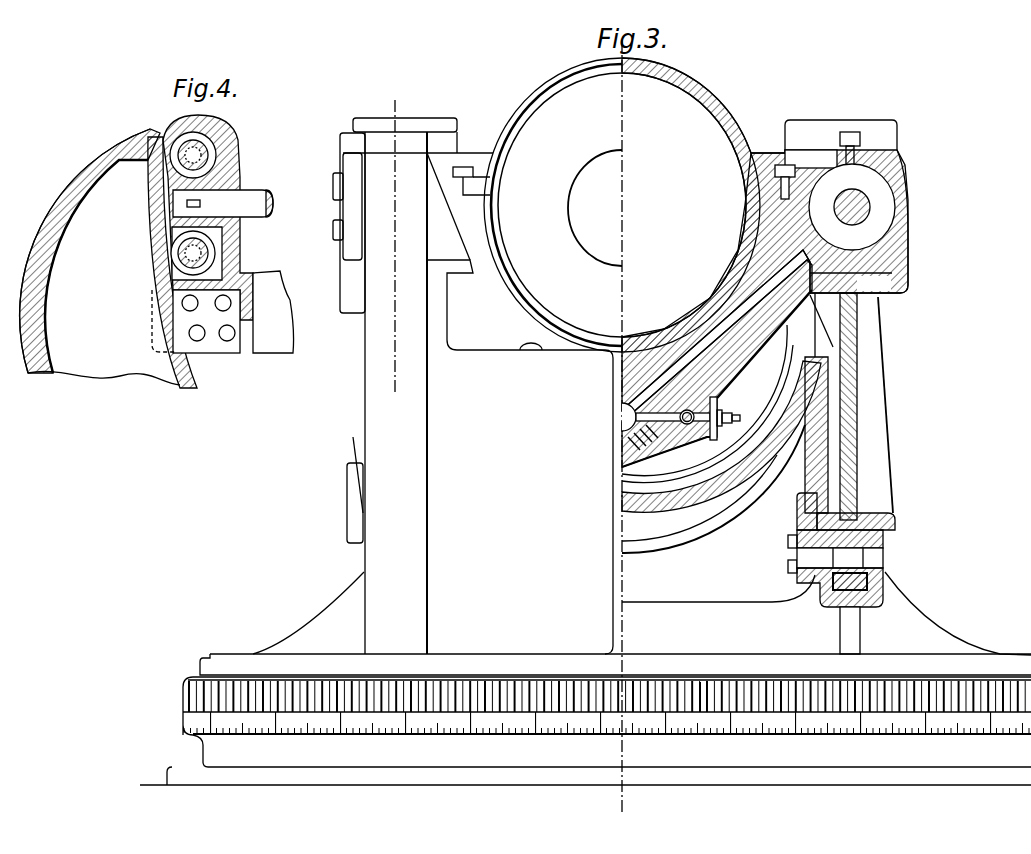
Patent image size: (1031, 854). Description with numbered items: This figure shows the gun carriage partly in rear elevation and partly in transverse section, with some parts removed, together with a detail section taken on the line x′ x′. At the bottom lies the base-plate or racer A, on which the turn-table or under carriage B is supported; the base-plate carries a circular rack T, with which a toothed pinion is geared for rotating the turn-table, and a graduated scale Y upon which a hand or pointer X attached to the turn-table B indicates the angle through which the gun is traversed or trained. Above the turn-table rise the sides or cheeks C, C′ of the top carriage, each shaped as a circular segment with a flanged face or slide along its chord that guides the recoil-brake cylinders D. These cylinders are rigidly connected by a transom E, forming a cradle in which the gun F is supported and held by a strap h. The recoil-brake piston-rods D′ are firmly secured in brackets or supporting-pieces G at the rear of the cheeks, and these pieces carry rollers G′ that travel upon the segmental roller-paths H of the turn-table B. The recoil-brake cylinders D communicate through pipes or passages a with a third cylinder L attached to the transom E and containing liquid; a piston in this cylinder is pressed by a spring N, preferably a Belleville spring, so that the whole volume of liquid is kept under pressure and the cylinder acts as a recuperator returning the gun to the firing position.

In FIG. 3, the gun F is at (625, 205).
In FIG. 3, the strap h is at (515, 121).
In FIG. 3, the recoil-brake cylinder D is at (829, 206).
In FIG. 3, the recoil-brake piston-rod D′ is at (852, 207).
In FIG. 4, the recoil-brake piston-rod D′ is at (223, 203).
In FIG. 3, the pipe or passage a is at (717, 363).
In FIG. 3, the transom E is at (765, 280).
In FIG. 3, the third cylinder L is at (725, 419).
In FIG. 3, the side or cheek C is at (757, 447).
In FIG. 3, the spring N is at (841, 573).
In FIG. 3, the turn-table B is at (615, 396).
In FIG. 4, the turn-table B is at (100, 257).
In FIG. 3, the side or cheek C′ is at (365, 440).
In FIG. 4, the side or cheek C′ is at (223, 312).
In FIG. 3, the section line x′ is at (393, 247).
In FIG. 3, the hand or pointer X is at (593, 706).
In FIG. 3, the graduated scale Y is at (607, 723).
In FIG. 3, the circular rack T is at (693, 697).
In FIG. 3, the base-plate or racer A is at (585, 773).
In FIG. 4, the bracket or supporting-piece G is at (211, 217).
In FIG. 4, the roller G′ is at (137, 252).
In FIG. 4, the segmental roller-path H is at (198, 377).